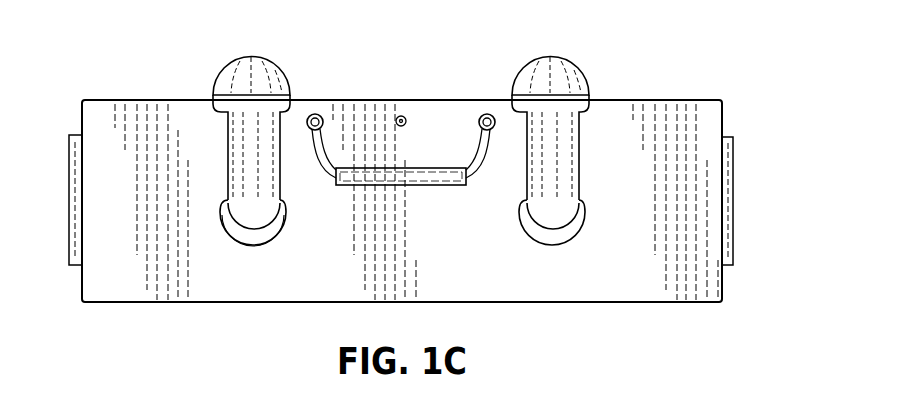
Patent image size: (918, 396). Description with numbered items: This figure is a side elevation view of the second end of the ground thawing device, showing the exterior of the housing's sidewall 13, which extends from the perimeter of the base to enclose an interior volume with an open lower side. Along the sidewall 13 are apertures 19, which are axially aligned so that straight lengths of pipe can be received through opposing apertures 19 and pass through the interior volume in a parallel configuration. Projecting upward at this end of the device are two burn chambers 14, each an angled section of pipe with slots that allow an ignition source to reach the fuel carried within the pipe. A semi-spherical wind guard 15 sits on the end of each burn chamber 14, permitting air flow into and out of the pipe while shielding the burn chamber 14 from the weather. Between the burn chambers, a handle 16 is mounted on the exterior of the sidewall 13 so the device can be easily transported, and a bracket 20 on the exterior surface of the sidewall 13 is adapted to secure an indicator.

The sidewall 13 is at (670, 128).
The burn chamber 14 is at (236, 149).
The semi-spherical wind guard 15 is at (567, 62).
The handle 16 is at (372, 177).
The aperture 19 is at (238, 248).
The bracket 20 is at (733, 180).